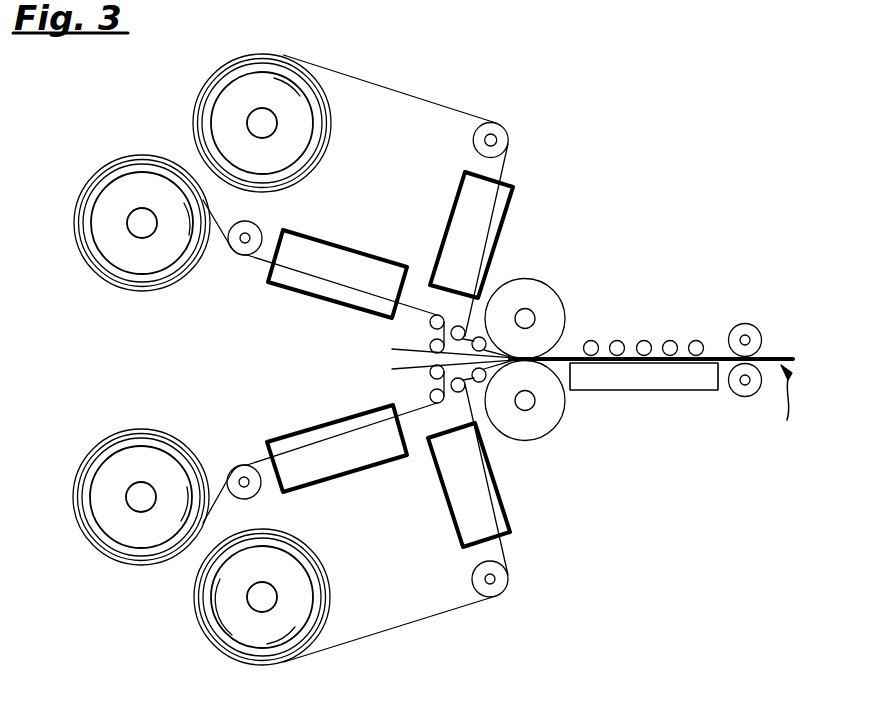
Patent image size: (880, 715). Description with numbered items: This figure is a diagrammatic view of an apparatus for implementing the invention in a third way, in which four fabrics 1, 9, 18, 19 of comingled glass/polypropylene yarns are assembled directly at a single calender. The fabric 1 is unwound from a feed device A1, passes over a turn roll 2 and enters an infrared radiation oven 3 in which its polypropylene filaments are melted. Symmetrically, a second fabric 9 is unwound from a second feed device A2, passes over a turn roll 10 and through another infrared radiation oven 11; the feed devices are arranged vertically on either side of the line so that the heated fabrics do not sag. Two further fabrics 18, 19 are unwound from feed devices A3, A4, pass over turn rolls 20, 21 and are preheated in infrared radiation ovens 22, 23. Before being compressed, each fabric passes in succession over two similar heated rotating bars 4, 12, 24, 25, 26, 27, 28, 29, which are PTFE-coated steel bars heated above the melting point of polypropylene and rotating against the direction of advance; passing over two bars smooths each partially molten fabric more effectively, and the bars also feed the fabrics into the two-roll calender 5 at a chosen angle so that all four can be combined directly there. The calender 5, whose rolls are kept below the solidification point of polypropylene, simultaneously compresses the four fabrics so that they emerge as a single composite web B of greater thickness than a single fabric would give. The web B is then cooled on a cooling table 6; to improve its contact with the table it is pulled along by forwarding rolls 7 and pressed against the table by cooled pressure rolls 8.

The fabric 1 is at (338, 65).
The turn roll 2 is at (505, 128).
The infrared radiation oven 3 is at (459, 178).
The PTFE-coated steel bar 4 is at (458, 318).
The two-roll calender 5 is at (545, 300).
The cooling table 6 is at (630, 383).
The forwarding rolls 7 is at (752, 332).
The cooled pressure rolls 8 is at (648, 341).
The fabric 9 is at (393, 632).
The turn roll 10 is at (500, 582).
The infrared radiation oven 11 is at (456, 542).
The PTFE-coated steel bar 12 is at (455, 392).
The fabric 18 is at (252, 262).
The fabric 19 is at (253, 462).
The turn roll 20 is at (262, 232).
The turn roll 21 is at (258, 490).
The infrared radiation oven 22 is at (343, 242).
The infrared radiation oven 23 is at (343, 476).
The heated rotating bar 24 is at (430, 318).
The heated rotating bar 25 is at (430, 402).
The heated rotating bar 26 is at (481, 337).
The heated rotating bar 27 is at (430, 348).
The heated rotating bar 28 is at (430, 373).
The heated rotating bar 29 is at (482, 383).
The feed device A1 is at (225, 118).
The feed device A2 is at (222, 597).
The feed device A3 is at (135, 190).
The feed device A4 is at (135, 530).
The composite web B is at (796, 406).